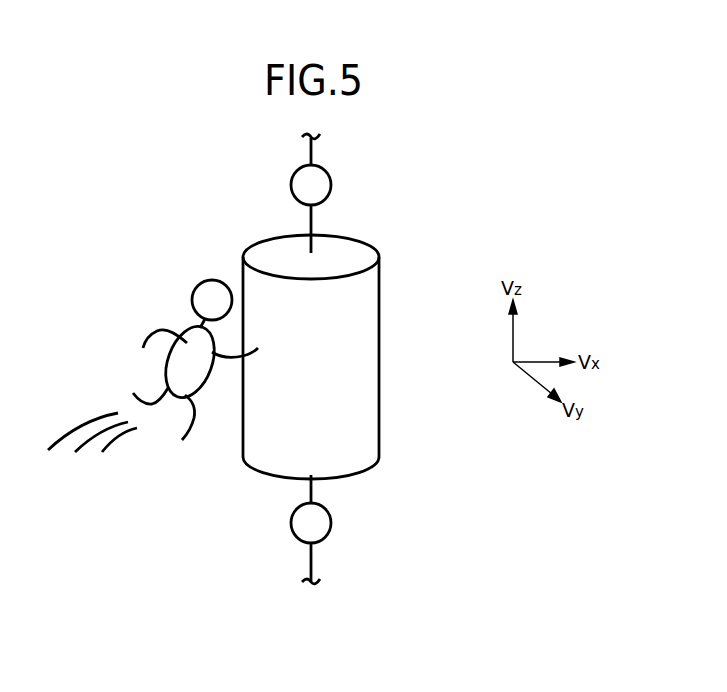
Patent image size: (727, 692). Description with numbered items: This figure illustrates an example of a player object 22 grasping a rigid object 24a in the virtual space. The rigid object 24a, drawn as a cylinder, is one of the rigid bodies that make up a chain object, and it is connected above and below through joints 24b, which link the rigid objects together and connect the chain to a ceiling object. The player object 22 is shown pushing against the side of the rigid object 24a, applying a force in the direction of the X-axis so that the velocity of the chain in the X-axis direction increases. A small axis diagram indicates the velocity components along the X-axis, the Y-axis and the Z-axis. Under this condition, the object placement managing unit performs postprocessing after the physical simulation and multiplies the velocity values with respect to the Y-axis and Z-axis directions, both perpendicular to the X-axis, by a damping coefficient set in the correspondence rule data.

The player object 22 is at (202, 281).
The rigid object 24a is at (380, 423).
The joint 24b is at (331, 185).